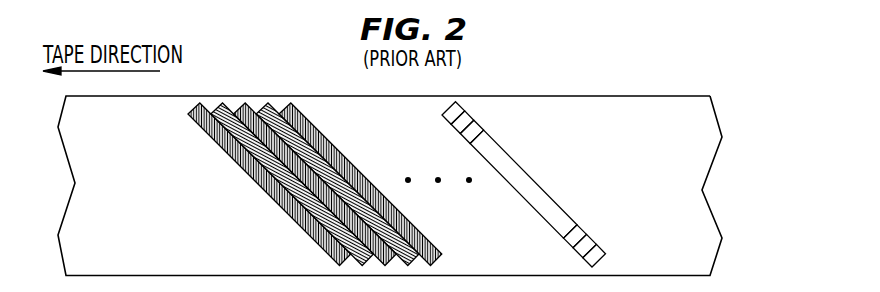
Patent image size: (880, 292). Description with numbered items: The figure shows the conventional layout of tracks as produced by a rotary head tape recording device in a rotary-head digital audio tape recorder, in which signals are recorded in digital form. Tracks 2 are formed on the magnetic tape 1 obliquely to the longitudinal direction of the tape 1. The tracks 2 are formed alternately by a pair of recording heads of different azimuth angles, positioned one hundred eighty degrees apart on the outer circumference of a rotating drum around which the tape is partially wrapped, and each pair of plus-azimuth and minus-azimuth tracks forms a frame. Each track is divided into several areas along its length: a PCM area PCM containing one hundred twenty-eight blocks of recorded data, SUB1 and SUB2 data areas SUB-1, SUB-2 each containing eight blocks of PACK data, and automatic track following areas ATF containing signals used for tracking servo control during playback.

The magnetic tape 1 is at (652, 94).
The tracks 2 is at (200, 103).
The SUB2 data area SUB-2 is at (463, 111).
The ATF area ATF is at (475, 128).
The PCM area PCM is at (527, 183).
The SUB1 data area SUB-1 is at (593, 248).